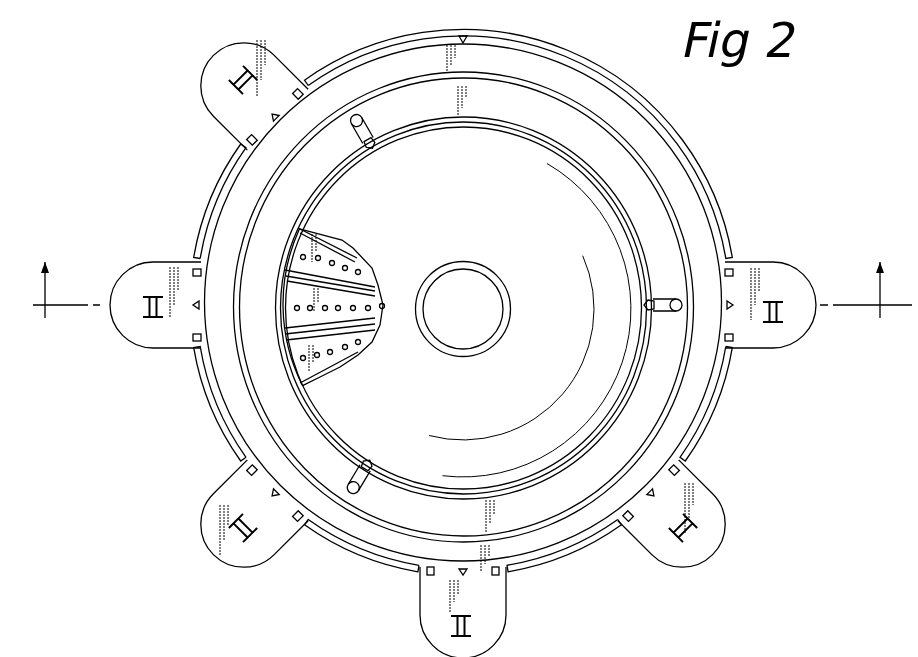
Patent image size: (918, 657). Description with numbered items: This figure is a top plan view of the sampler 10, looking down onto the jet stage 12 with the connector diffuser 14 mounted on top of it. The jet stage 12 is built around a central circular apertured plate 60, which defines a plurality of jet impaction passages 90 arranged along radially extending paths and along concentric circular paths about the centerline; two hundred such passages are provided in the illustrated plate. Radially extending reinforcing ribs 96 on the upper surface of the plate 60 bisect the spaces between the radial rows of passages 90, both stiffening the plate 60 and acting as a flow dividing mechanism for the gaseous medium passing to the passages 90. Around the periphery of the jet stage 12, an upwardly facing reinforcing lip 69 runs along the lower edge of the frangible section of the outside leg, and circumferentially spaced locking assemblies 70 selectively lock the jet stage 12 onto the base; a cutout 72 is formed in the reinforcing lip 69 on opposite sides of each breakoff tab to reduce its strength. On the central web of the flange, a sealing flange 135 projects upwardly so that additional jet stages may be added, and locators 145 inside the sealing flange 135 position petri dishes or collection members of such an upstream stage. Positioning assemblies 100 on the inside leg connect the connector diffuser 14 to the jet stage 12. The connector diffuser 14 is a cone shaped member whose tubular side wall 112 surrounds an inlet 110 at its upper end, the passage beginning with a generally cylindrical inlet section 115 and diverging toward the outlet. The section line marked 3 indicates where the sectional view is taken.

The section line 3- 3 is at (466, 278).
The sampler 10 is at (786, 433).
The jet stage 12 is at (710, 182).
The connector diffuser 14 is at (603, 192).
The central circular apertured plate 60 is at (325, 300).
The reinforcing lip 69 is at (701, 448).
The locking assemblies 70 is at (281, 46).
The cutout 72 is at (681, 475).
The jet impaction passages 90 is at (354, 270).
The reinforcing ribs 96 is at (333, 238).
The positioning assemblies 100 is at (649, 314).
The inlet 110 is at (480, 290).
The tubular side wall 112 is at (598, 405).
The cylindrical inlet section 115 is at (490, 325).
The sealing flange 135 is at (508, 537).
The locators 145 is at (367, 130).